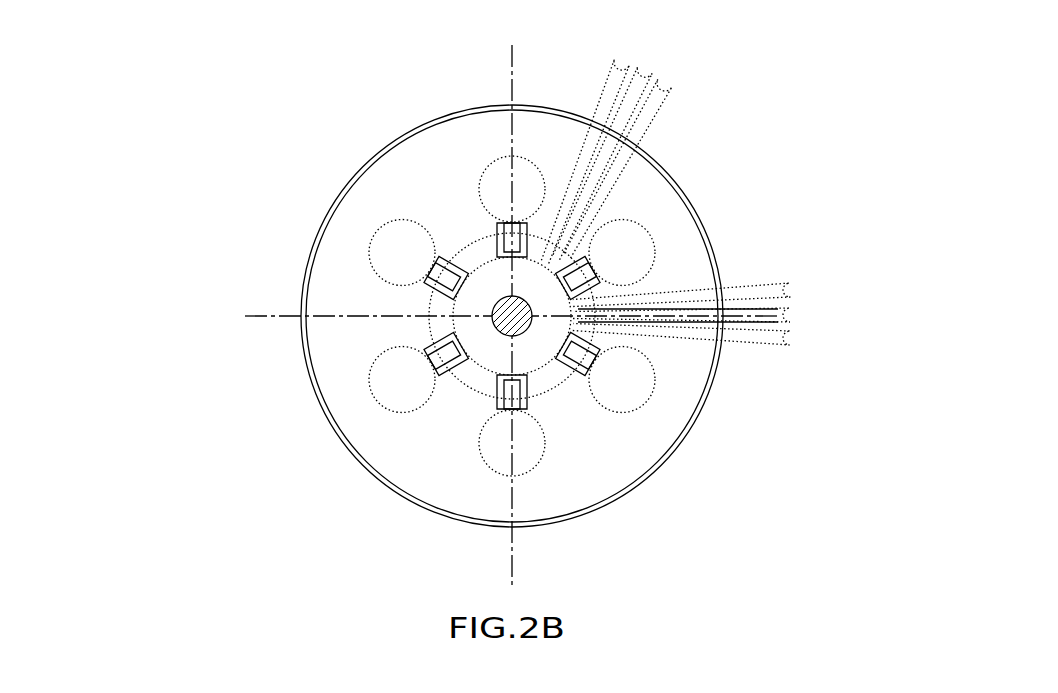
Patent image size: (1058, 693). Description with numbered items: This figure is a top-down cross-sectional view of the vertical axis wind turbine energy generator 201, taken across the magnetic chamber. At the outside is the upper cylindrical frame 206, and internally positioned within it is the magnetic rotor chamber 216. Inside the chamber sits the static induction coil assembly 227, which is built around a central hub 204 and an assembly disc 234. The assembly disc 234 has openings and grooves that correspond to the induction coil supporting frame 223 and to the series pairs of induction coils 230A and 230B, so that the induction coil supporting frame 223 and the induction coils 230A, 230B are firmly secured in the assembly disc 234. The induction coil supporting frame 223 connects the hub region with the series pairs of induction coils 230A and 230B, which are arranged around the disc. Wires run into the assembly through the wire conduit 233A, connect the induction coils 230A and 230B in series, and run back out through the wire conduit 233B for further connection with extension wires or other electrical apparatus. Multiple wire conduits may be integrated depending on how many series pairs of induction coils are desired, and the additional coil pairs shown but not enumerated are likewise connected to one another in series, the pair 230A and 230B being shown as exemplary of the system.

The vertical axis wind turbine energy generator 201 is at (227, 193).
The central hub 204 is at (495, 318).
The upper cylindrical frame 206 is at (310, 368).
The magnetic rotor chamber 216 is at (655, 432).
The induction coil supporting frame 223 is at (558, 355).
The static induction coil assembly 227 is at (658, 238).
The induction coil 230A is at (497, 181).
The induction coil 230B is at (498, 440).
The wire conduit 233A is at (662, 70).
The wire conduit 233B is at (805, 316).
The assembly disc 234 is at (583, 447).